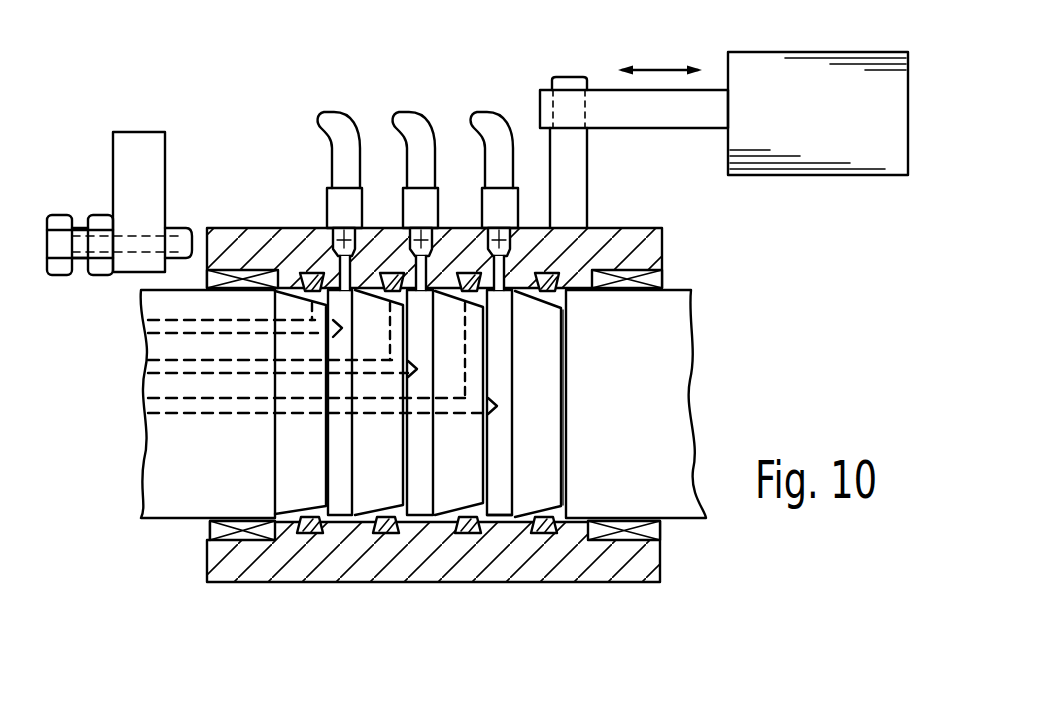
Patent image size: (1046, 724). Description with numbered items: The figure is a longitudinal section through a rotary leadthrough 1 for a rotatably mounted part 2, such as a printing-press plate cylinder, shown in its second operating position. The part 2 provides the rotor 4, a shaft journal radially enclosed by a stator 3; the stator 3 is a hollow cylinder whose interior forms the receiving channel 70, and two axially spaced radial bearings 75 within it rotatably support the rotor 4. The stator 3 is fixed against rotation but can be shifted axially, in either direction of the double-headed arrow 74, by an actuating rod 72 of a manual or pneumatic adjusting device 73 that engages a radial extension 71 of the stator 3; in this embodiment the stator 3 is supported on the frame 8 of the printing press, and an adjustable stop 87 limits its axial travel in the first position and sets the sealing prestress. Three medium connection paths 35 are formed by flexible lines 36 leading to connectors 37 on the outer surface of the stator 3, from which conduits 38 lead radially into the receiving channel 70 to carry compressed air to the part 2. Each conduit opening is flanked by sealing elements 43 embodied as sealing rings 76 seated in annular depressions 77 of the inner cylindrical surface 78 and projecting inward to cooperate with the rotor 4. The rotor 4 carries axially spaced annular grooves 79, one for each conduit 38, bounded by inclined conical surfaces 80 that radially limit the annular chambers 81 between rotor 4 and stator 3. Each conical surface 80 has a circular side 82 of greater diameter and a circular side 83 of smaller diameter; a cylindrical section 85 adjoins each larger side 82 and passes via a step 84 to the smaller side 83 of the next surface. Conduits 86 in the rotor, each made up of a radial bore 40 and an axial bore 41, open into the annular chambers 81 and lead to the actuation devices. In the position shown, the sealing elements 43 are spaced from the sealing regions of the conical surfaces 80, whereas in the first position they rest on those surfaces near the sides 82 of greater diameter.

The rotary leadthrough 1 is at (231, 117).
The rotatably mounted part 2 is at (165, 452).
The stator 3 is at (637, 232).
The rotor 4 is at (663, 335).
The frame 8 is at (264, 0).
The medium connection paths 35 is at (309, 380).
The flexible lines 36 is at (498, 148).
The connectors 37 is at (410, 207).
The conduits 38 is at (476, 252).
The radial bore 40 is at (470, 350).
The axial bore 41 is at (368, 370).
The sealing elements 43 is at (388, 538).
The receiving channel 70 is at (362, 541).
The radial extension 71 is at (570, 176).
The actuating rod 72 is at (687, 107).
The adjusting device 73 is at (792, 88).
The double-headed arrow 74 is at (658, 67).
The radial bearings 75 is at (243, 270).
The sealing rings 76 is at (546, 272).
The annular depressions 77 is at (311, 268).
The inner cylindrical surface 78 is at (560, 520).
The annular grooves 79 is at (373, 520).
The conical surfaces 80 is at (540, 502).
The annular chambers 81 is at (453, 523).
The circular side of greater diameter 82 is at (517, 367).
The circular side of smaller diameter 83 is at (565, 387).
The step 84 is at (488, 503).
The cylindrical section 85 is at (363, 527).
The conduits 86 is at (147, 403).
The adjustable stop 87 is at (97, 190).